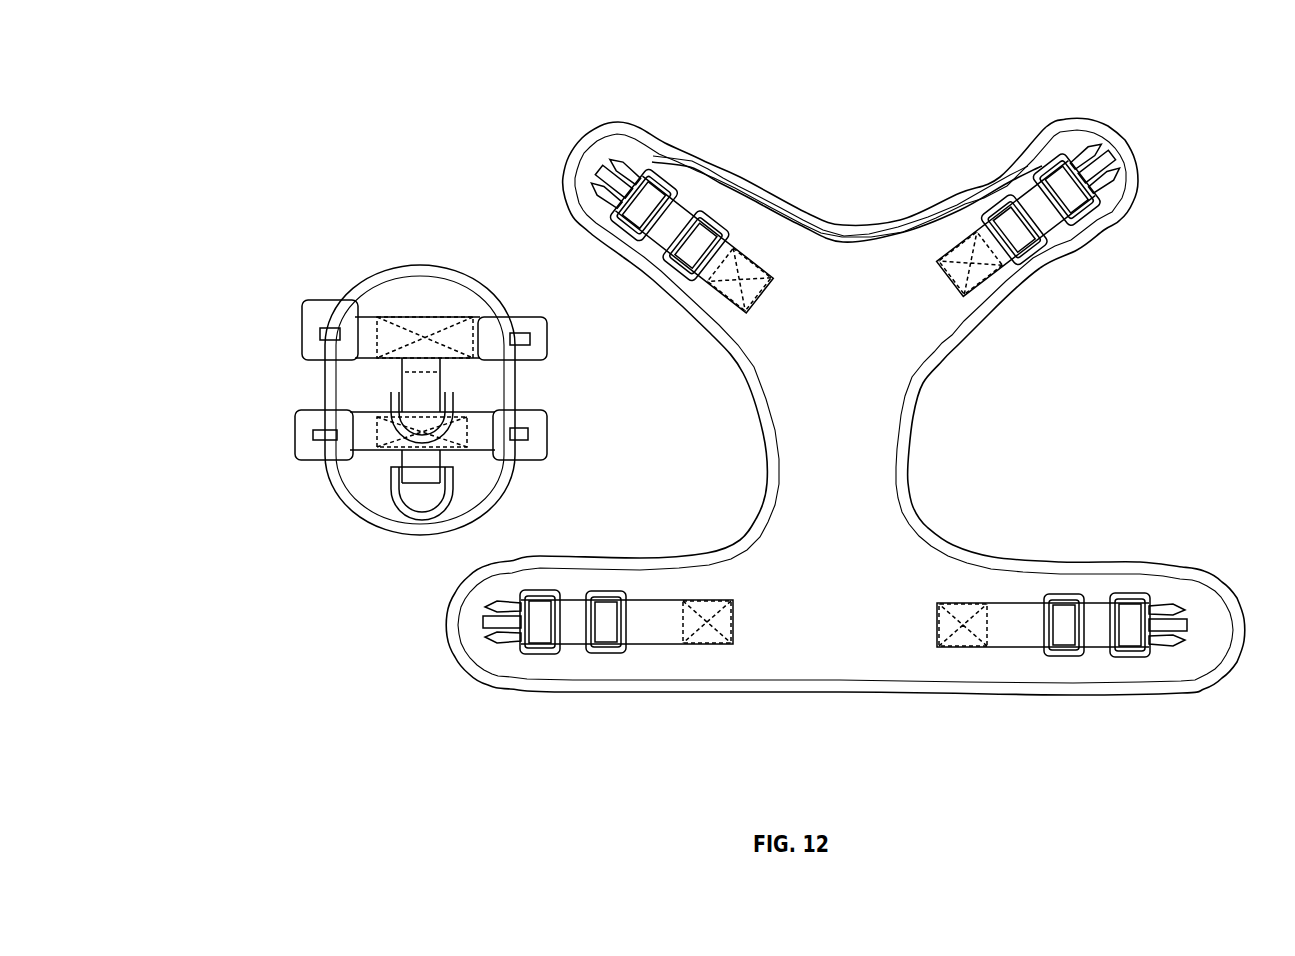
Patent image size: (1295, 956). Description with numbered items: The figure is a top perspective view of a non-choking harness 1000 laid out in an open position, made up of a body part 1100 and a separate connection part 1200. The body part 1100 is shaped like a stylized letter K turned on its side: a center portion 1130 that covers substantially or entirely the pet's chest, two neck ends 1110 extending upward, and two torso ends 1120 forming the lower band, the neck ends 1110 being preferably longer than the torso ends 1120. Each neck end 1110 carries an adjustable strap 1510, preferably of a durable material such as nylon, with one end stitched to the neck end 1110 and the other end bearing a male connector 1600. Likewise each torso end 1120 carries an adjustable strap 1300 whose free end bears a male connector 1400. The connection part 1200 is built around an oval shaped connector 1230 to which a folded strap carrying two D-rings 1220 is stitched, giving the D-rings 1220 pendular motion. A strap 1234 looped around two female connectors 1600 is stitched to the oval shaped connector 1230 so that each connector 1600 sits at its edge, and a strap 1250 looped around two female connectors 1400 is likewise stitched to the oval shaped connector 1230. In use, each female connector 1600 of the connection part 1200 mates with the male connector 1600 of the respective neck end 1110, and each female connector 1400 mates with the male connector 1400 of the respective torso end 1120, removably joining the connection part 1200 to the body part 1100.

The non-choking harness 1000 is at (803, 423).
The body part 1100 is at (763, 480).
The neck end 1110 is at (588, 130).
The torso end 1120 is at (1138, 563).
The center portion 1130 is at (840, 315).
The connection part 1200 is at (391, 371).
The D-ring 1220 is at (417, 507).
The oval shaped connector 1230 is at (357, 380).
The strap 1234 is at (437, 330).
The strap 1250 is at (465, 428).
The adjustable strap 1300 is at (657, 625).
The mated connector 1400 is at (545, 653).
The adjustable strap 1510 is at (677, 217).
The mated connector 1600 is at (660, 183).